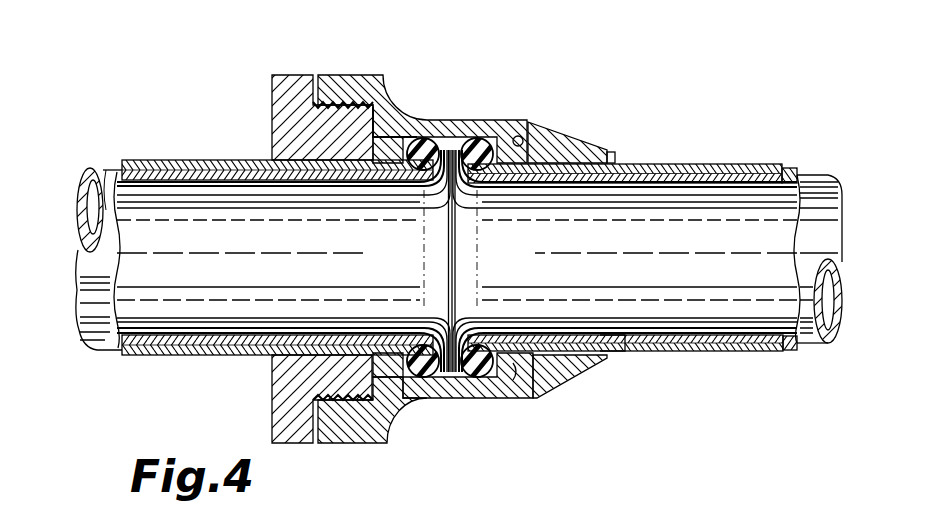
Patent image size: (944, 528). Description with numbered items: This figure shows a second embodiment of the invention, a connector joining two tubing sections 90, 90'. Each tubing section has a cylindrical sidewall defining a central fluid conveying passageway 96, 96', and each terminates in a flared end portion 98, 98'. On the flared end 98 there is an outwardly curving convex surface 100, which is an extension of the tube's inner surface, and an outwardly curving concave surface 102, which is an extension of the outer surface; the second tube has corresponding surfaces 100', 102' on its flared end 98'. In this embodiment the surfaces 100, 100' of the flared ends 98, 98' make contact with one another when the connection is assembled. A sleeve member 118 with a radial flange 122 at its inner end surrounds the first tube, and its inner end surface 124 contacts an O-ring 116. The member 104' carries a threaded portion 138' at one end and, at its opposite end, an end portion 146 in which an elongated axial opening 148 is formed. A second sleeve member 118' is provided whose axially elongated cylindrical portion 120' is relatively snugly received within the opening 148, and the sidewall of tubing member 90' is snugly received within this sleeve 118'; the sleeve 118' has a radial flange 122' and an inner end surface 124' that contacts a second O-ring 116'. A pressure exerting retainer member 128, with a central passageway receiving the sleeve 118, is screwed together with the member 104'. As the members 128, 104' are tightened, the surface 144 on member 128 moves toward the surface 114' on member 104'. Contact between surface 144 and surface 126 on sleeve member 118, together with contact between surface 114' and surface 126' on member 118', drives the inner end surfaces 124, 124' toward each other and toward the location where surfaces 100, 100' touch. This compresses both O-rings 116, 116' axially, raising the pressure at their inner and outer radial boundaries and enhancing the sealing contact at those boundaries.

The tubing section 90 is at (136, 231).
The tubing section 90' is at (792, 221).
The central fluid conveying passageway 96 is at (101, 230).
The central fluid conveying passageway 96' is at (819, 227).
The flared end portion 98 is at (491, 261).
The flared end portion 98' is at (410, 261).
The outwardly curving surface 100 is at (415, 310).
The outwardly curving surface 100' is at (497, 310).
The outwardly curving surface 102 is at (438, 120).
The outwardly curving surface 102' is at (496, 114).
The socket member 104' is at (422, 95).
The surface 114' is at (574, 125).
The O-ring 116 is at (454, 383).
The O-ring 116' is at (534, 117).
The sleeve member 118 is at (277, 237).
The sleeve member 118' is at (625, 231).
The cylindrical portion 120' is at (761, 231).
The radial flange 122 is at (370, 426).
The radial flange 122' is at (470, 399).
The inner end surface 124 is at (397, 241).
The inner end surface 124' is at (625, 261).
The surface 126 is at (298, 399).
The surface 126' is at (580, 385).
The pressure exerting retainer member 128 is at (273, 100).
The threaded portion 138' is at (348, 68).
The surface 144 is at (360, 182).
The end portion 146 is at (607, 150).
The elongated axial opening 148 is at (622, 335).